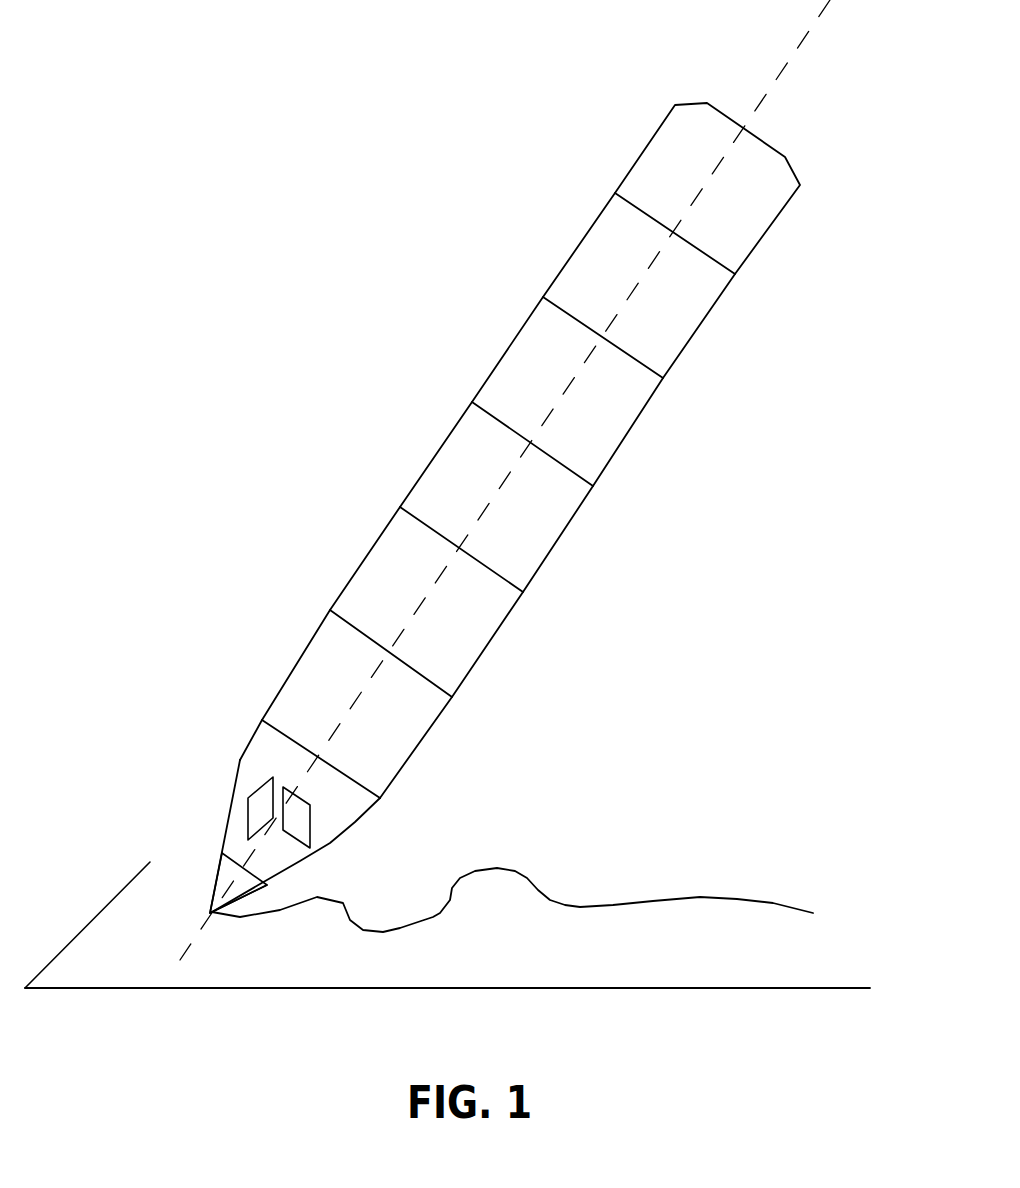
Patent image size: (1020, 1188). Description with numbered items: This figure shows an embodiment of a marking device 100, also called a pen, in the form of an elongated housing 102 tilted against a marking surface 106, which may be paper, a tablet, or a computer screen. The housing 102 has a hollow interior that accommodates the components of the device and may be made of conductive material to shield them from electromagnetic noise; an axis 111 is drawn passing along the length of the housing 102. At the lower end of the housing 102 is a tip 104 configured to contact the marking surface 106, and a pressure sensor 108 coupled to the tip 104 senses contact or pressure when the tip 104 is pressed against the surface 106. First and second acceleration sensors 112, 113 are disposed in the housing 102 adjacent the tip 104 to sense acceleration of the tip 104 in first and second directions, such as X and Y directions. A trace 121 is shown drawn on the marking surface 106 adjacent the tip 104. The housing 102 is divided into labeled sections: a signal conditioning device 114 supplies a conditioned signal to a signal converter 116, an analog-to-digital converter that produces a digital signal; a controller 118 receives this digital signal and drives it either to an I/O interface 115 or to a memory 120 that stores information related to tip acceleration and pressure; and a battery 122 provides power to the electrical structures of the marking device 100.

The marking device 100 is at (288, 515).
The elongated housing 102 is at (800, 180).
The tip 104 is at (213, 917).
The marking surface 106 is at (613, 977).
The pressure sensor 108 is at (218, 880).
The axis 111 is at (820, 0).
The first acceleration sensor 112 is at (308, 822).
The second acceleration sensor 113 is at (263, 783).
The signal conditioning device 114 is at (407, 737).
The I/O interface 115 is at (763, 232).
The signal converter 116 is at (472, 638).
The controller 118 is at (550, 515).
The memory 120 is at (613, 423).
The ink trace 121 is at (728, 898).
The battery 122 is at (705, 290).